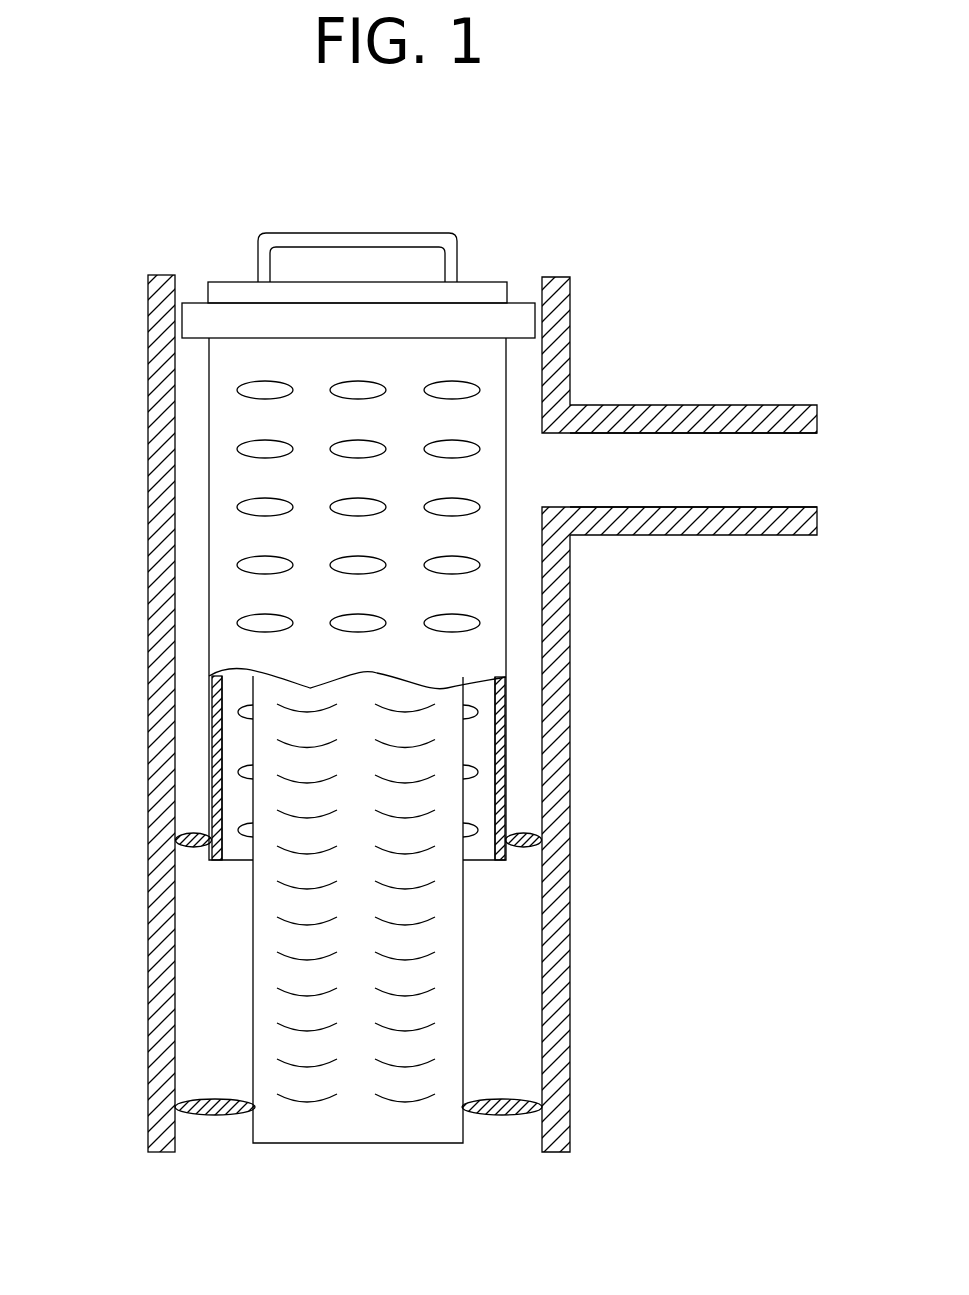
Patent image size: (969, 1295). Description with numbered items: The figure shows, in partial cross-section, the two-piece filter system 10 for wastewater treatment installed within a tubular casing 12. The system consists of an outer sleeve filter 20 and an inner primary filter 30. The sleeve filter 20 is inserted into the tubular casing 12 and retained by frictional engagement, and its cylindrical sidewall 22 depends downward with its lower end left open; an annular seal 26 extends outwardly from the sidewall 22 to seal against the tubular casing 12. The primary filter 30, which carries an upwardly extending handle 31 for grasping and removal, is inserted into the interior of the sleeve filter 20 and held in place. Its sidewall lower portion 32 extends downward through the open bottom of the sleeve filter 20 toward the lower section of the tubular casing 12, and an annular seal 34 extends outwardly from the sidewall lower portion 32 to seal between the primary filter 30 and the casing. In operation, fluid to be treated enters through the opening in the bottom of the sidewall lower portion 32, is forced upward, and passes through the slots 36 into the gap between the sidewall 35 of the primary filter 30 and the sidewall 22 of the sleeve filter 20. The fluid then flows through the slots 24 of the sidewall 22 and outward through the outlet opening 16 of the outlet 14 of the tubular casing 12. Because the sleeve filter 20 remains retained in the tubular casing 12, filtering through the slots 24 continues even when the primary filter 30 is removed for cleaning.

The two-piece filter system 10 is at (498, 234).
The tubular casing 12 is at (147, 543).
The outlet 14 is at (771, 405).
The outlet opening 16 is at (795, 467).
The sleeve filter 20 is at (525, 296).
The sidewall 22 is at (490, 441).
The slots 24 is at (455, 500).
The annular seal 26 is at (192, 848).
The primary filter 30 is at (232, 274).
The handle 31 is at (355, 233).
The sidewall lower portion 32 is at (402, 1132).
The annular seal 34 is at (483, 1117).
The sidewall 35 is at (413, 726).
The slots 36 is at (313, 1103).